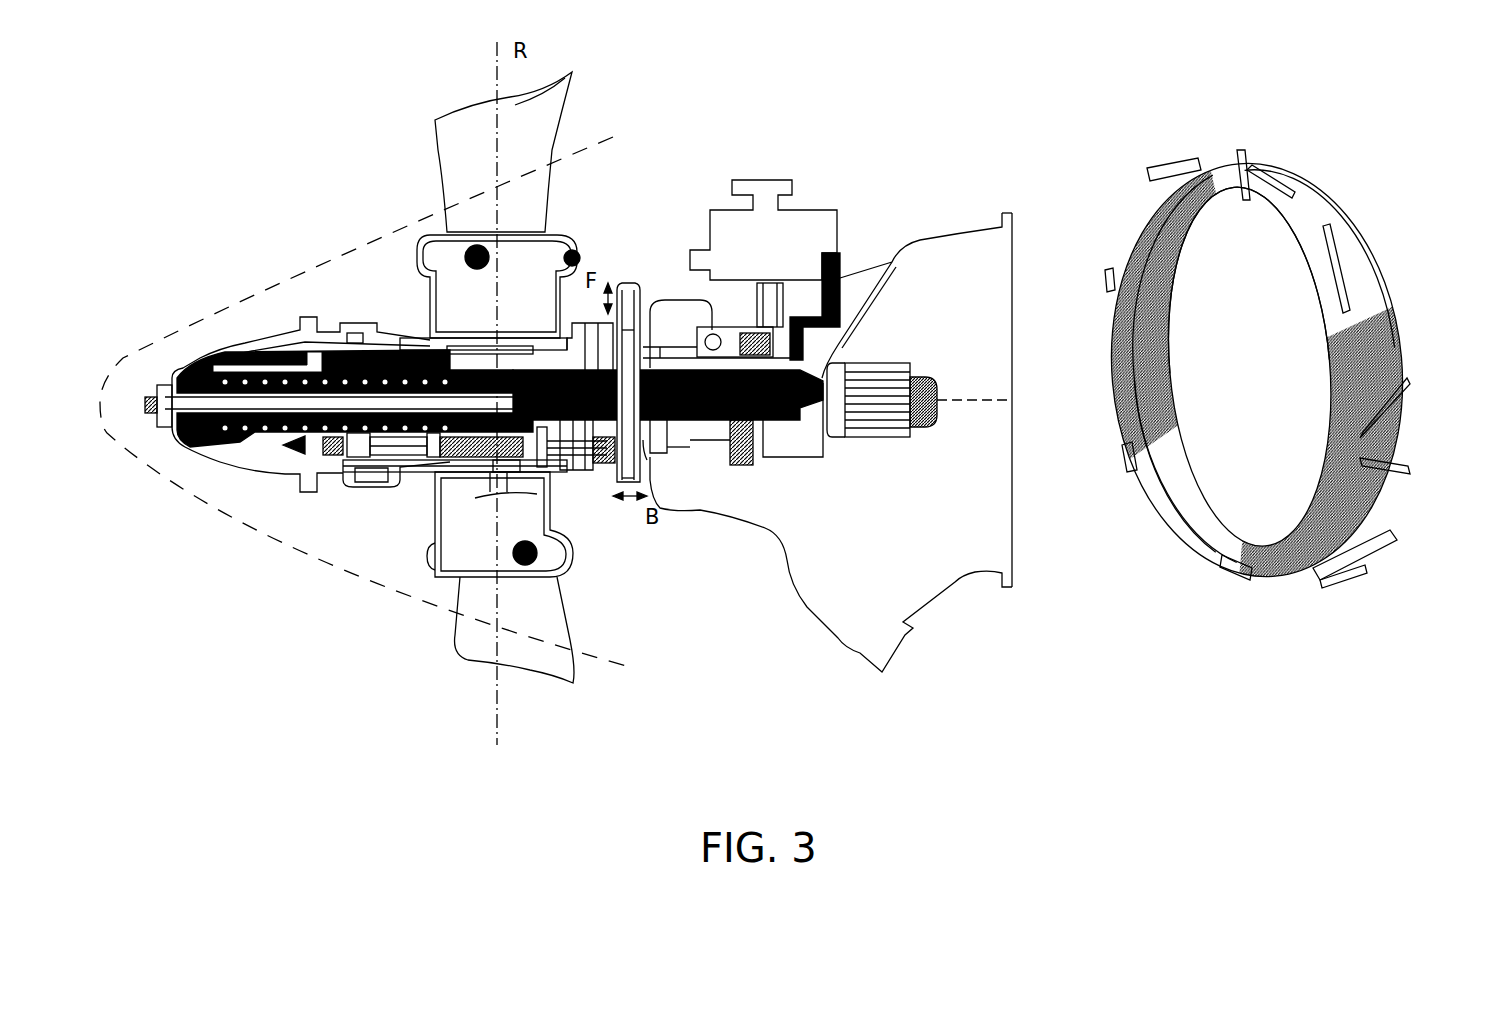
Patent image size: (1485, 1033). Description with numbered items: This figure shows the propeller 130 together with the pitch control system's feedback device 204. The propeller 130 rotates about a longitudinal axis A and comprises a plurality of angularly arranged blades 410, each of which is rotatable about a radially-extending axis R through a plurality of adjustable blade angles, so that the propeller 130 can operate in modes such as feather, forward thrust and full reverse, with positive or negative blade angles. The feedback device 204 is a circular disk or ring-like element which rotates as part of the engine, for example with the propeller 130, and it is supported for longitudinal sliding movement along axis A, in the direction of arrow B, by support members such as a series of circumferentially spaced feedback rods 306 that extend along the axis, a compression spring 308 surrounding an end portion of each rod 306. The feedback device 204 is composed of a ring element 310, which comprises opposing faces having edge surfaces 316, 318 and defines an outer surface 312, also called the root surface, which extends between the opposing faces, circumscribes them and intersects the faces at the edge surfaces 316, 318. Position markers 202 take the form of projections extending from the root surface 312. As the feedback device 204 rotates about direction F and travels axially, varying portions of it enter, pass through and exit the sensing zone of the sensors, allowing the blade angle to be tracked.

The propeller 130 is at (240, 198).
The blades 410 is at (425, 110).
The feedback device 204 is at (630, 285).
The feedback rods 306 is at (570, 473).
The compression spring 308 is at (432, 477).
The ring element 310 is at (1190, 517).
The outer surface 312 is at (1300, 213).
The edge surface 316 is at (1280, 240).
The edge surface 318 is at (1362, 268).
The position markers 202 is at (1340, 337).